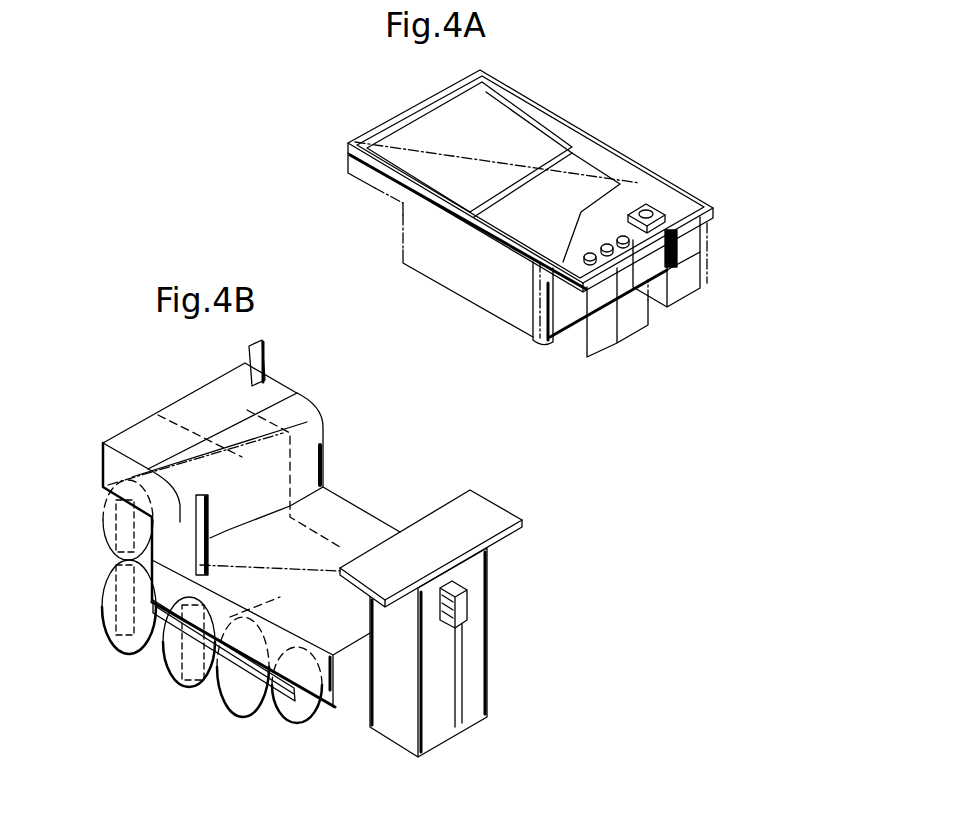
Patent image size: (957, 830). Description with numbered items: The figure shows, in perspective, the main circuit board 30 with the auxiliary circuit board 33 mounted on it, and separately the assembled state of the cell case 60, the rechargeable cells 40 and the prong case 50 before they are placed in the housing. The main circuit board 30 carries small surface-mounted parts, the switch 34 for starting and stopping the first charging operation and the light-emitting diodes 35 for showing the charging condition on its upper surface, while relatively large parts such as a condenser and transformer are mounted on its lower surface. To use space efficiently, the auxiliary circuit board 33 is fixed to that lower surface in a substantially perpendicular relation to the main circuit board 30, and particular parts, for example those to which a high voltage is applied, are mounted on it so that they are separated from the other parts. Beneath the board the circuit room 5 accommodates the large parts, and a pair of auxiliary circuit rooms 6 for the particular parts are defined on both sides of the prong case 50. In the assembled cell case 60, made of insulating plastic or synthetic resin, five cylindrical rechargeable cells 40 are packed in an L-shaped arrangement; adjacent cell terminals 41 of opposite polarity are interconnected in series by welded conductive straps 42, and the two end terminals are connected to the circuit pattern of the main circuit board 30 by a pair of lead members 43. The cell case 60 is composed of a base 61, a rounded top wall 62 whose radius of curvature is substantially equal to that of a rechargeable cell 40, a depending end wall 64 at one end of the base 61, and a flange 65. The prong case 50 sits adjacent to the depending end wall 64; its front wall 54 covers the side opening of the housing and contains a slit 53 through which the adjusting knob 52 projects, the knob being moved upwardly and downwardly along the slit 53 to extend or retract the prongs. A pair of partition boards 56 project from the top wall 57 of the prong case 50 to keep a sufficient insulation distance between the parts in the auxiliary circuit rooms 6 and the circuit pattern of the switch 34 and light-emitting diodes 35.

In FIG. 4A, the main circuit board 30 is at (512, 135).
In FIG. 4A, the light-emitting diodes 35 is at (592, 250).
In FIG. 4A, the switch 34 is at (648, 205).
In FIG. 4A, the circuit room 5 is at (427, 240).
In FIG. 4A, the auxiliary circuit board 33 is at (633, 292).
In FIG. 4A, the auxiliary circuit rooms 6 is at (617, 345).
In FIG. 4B, the rounded top wall 62 is at (198, 466).
In FIG. 4B, the cell case 60 is at (255, 530).
In FIG. 4B, the base 61 is at (323, 510).
In FIG. 4B, the lead members 43 is at (267, 358).
In FIG. 4B, the rechargeable cells 40 is at (110, 519).
In FIG. 4B, the conductive straps 42 is at (110, 547).
In FIG. 4B, the flange 65 is at (270, 653).
In FIG. 4B, the cell terminals 41 is at (292, 723).
In FIG. 4B, the depending end wall 64 is at (348, 720).
In FIG. 4B, the partition boards 56 is at (470, 505).
In FIG. 4B, the top wall 57 is at (488, 540).
In FIG. 4B, the prong case 50 is at (468, 567).
In FIG. 4B, the adjusting knob 52 is at (468, 602).
In FIG. 4B, the slit 53 is at (456, 717).
In FIG. 4B, the front wall 54 is at (490, 682).